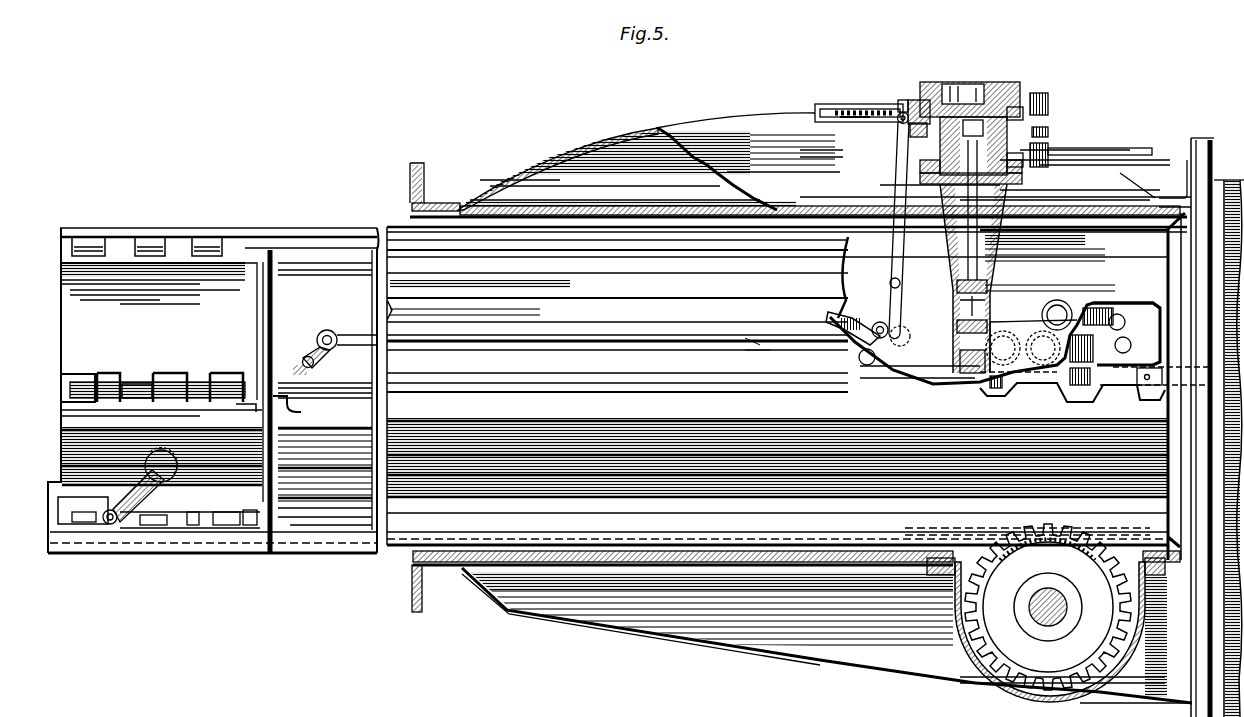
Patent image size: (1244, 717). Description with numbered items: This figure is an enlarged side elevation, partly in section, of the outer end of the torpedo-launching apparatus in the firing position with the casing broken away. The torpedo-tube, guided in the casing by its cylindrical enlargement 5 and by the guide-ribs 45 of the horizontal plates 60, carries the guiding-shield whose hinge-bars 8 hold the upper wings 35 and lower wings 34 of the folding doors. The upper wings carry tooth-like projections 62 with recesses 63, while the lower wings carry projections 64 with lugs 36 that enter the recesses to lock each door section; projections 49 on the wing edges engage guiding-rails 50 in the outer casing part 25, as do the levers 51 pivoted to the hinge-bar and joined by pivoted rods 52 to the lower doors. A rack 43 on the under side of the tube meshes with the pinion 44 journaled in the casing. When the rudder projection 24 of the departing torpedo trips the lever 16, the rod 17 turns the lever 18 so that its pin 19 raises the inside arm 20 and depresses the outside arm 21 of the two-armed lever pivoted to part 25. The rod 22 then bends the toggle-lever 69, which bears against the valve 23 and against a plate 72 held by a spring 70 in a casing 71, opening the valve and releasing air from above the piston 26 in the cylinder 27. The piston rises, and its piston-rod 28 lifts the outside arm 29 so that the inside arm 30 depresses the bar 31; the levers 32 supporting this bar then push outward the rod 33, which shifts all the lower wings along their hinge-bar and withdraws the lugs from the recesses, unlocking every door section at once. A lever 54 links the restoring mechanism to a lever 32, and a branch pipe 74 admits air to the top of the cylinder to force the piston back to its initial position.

The cylindrical enlargement 5 is at (787, 386).
The hinge-bar 8 is at (150, 244).
The lever 16 is at (314, 352).
The rod 17 is at (777, 405).
The lever 18 is at (900, 350).
The pin 19 is at (858, 352).
The arm 20 is at (838, 318).
The arm 21 is at (897, 312).
The rod 22 is at (895, 206).
The valve 23 is at (906, 98).
The projection 24 is at (258, 396).
The front or outer part 25 is at (800, 165).
The piston 26 is at (1005, 100).
The cylinder 27 is at (1030, 170).
The piston-rod 28 is at (965, 262).
The arm 29 is at (1000, 295).
The arm 30 is at (1112, 312).
The bar 31 is at (1100, 347).
The lever 32 is at (1020, 390).
The rod 33 is at (303, 408).
The lower half or wing 34 is at (84, 404).
The upper half or wing 35 is at (155, 310).
The lug 36 is at (135, 384).
The rack 43 is at (247, 412).
The pinion 44 is at (1046, 613).
The guide-rib 45 is at (570, 256).
The projection 49 is at (240, 86).
The guiding-rail 50 is at (210, 530).
The lever 51 is at (96, 528).
The pivoted rod 52 is at (126, 524).
The lever 54 is at (1036, 288).
The horizontal plate 60 is at (720, 268).
The tooth-like projection 62 is at (182, 380).
The recess 63 is at (147, 400).
The tooth-like projection 64 is at (105, 380).
The toggle-lever 69 is at (920, 134).
The spring 70 is at (840, 106).
The casing 71 is at (862, 122).
The plate 72 is at (880, 108).
The branch pipe 74 is at (1052, 110).